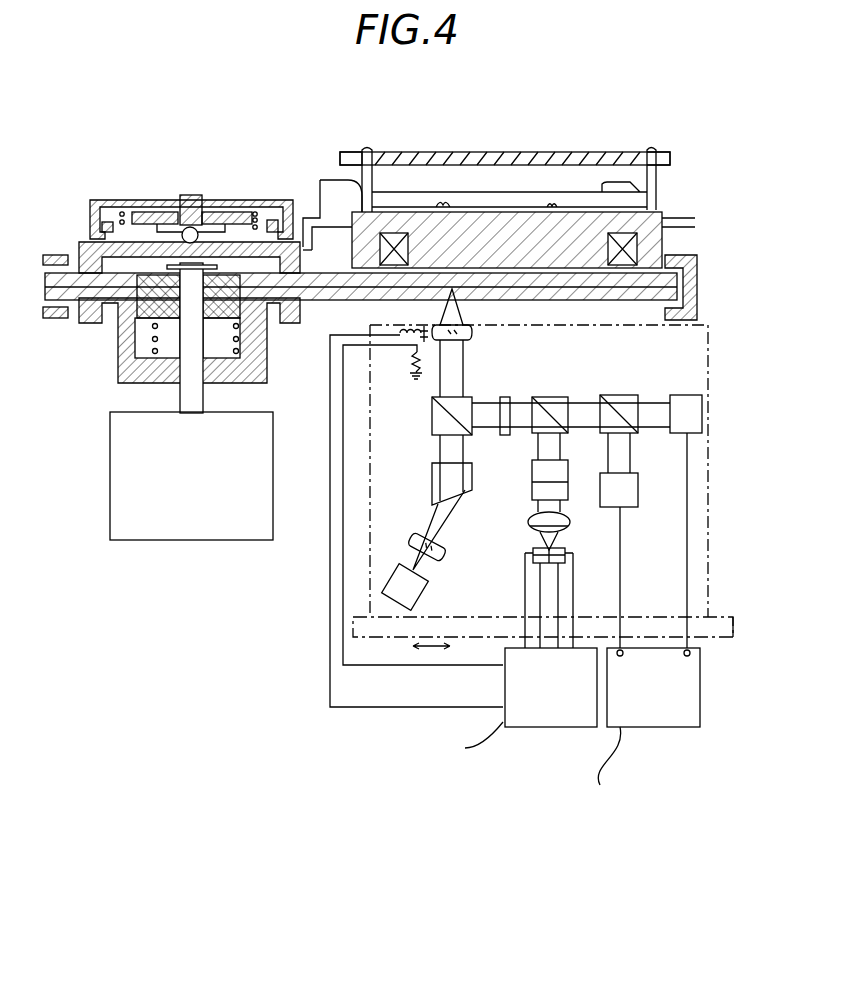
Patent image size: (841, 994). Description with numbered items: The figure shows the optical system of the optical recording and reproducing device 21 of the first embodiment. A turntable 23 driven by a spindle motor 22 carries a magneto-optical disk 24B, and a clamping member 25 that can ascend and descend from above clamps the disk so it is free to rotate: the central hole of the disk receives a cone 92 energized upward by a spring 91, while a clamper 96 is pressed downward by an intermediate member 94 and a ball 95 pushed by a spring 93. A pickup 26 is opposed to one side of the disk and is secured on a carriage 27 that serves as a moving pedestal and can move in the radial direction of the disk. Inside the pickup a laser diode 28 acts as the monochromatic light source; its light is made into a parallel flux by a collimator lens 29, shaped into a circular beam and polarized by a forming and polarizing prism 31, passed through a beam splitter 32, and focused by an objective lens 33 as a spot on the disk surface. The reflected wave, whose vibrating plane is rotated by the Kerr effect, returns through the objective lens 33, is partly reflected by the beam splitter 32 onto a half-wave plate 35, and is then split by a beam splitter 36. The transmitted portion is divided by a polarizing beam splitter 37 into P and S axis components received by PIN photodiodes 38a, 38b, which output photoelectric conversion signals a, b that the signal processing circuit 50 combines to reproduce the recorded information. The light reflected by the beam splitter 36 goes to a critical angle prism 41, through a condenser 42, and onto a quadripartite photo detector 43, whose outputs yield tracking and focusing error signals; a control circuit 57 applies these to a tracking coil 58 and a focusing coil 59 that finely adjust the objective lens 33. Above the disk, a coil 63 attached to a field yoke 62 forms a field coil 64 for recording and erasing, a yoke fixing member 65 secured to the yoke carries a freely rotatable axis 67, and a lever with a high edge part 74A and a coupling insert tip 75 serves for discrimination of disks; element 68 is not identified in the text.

The optical recording and reproducing device 21 is at (528, 151).
The spindle motor 22 is at (189, 537).
The turntable 23 is at (100, 328).
The magneto-optical disk 24B is at (382, 300).
The clamping member 25 is at (235, 190).
The pickup 26 is at (709, 515).
The carriage 27 is at (712, 617).
The laser diode 28 is at (422, 592).
The collimator lens 29 is at (445, 555).
The forming and polarizing prism 31 is at (432, 487).
The beam splitter 32 is at (432, 421).
The objective lens 33 is at (471, 331).
The half-wave plate 35 is at (504, 397).
The beam splitter 36 is at (545, 397).
The polarizing beam splitter 37 is at (610, 395).
The PIN photodiode 38a is at (681, 395).
The PIN photodiode 38b is at (628, 507).
The critical angle prism 41 is at (532, 486).
The condenser 42 is at (528, 522).
The quadripartite photo detector 43 is at (565, 550).
The signal processing circuit 50 is at (657, 727).
The control circuit 57 is at (553, 730).
The tracking coil 58 is at (415, 322).
The focusing coil 59 is at (414, 356).
The field yoke 62 is at (612, 152).
The coil 63 is at (660, 213).
The field coil 64 is at (666, 240).
The yoke fixing member 65 is at (490, 212).
The freely rotatable axis 67 is at (350, 152).
The cartridge frame 68 is at (582, 212).
The high edge part 74A is at (322, 180).
The coupling insert tip 75 is at (306, 258).
The spring 91 is at (245, 360).
The cone 92 is at (240, 313).
The spring 93 is at (120, 207).
The intermediate member 94 is at (165, 200).
The ball 95 is at (191, 212).
The clamper 96 is at (87, 250).
The photoelectric conversion signal a is at (687, 565).
The photoelectric conversion signal b is at (620, 590).